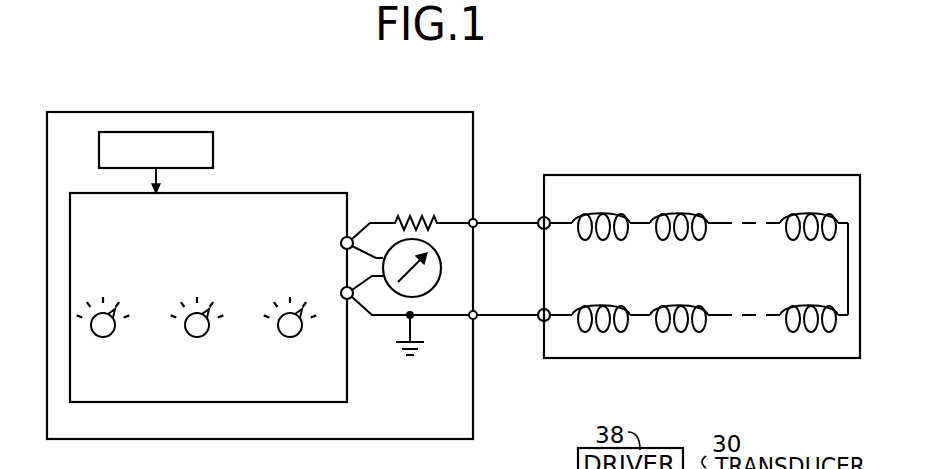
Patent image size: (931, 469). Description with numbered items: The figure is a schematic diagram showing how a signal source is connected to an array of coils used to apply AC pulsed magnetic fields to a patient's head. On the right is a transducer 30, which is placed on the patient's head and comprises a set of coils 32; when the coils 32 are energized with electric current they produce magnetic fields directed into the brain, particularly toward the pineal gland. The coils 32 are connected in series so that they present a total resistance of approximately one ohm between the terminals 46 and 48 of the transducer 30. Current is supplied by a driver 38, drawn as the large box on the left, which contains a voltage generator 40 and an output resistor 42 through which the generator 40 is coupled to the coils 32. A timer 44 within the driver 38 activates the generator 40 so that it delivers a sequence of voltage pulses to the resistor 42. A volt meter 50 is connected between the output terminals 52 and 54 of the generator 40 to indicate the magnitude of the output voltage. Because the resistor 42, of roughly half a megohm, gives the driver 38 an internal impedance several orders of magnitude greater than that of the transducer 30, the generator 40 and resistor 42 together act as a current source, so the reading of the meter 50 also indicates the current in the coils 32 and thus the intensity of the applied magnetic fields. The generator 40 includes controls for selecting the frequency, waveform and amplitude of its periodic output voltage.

The transducer 30 is at (702, 240).
The coils 32 is at (683, 232).
The driver 38 is at (317, 118).
The voltage generator 40 is at (283, 193).
The output resistor 42 is at (419, 215).
The timer 44 is at (213, 150).
The terminal of the transducer 46 is at (542, 217).
The terminal of the transducer 48 is at (542, 321).
The volt meter 50 is at (438, 274).
The output terminal of the generator 52 is at (353, 239).
The output terminal of the generator 54 is at (351, 298).